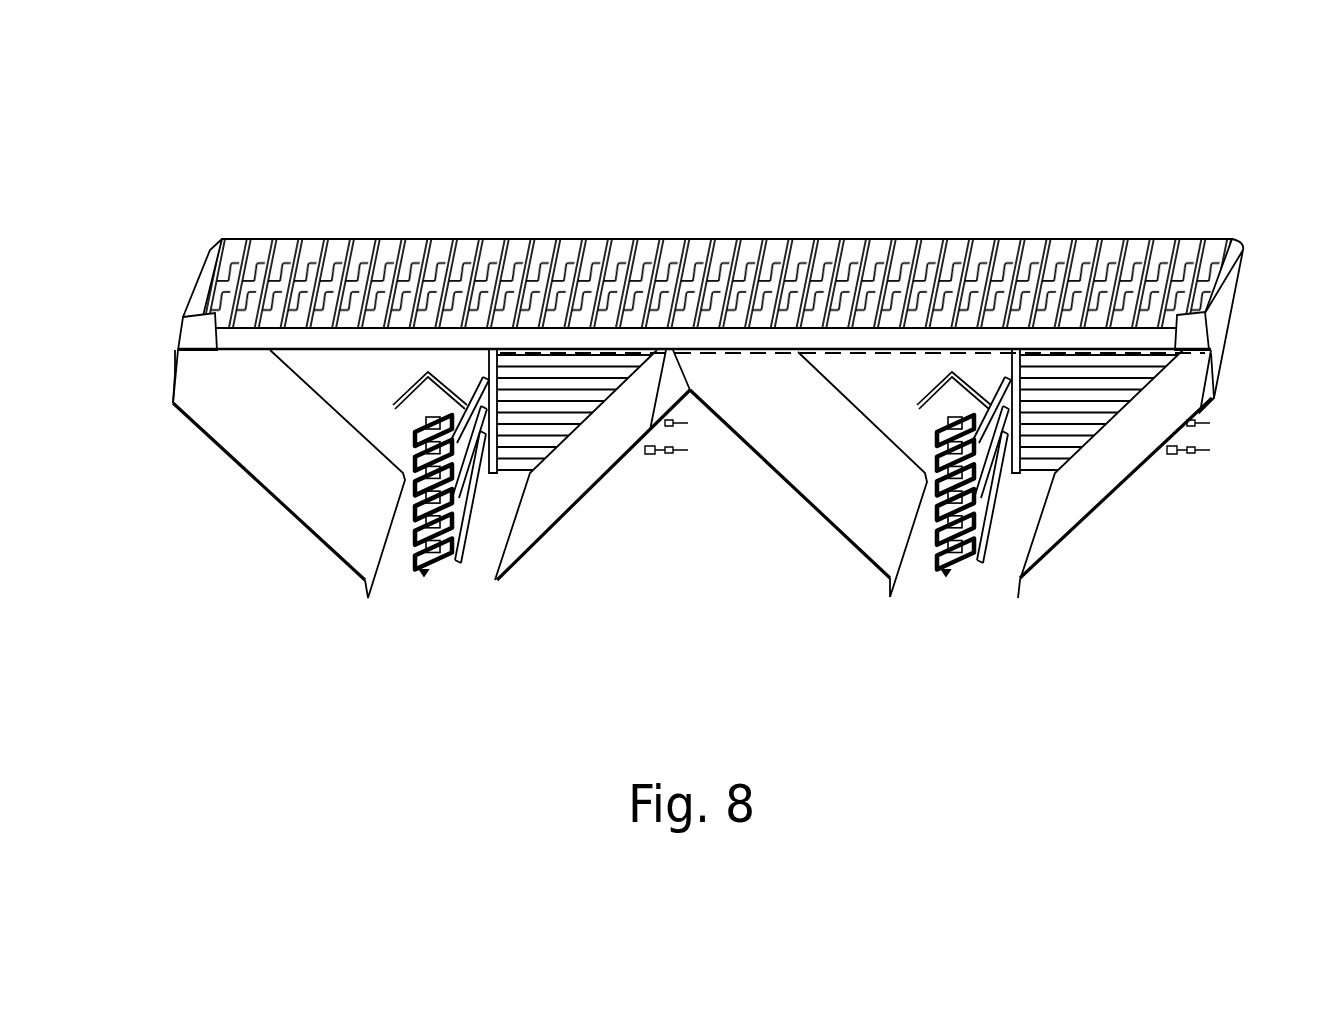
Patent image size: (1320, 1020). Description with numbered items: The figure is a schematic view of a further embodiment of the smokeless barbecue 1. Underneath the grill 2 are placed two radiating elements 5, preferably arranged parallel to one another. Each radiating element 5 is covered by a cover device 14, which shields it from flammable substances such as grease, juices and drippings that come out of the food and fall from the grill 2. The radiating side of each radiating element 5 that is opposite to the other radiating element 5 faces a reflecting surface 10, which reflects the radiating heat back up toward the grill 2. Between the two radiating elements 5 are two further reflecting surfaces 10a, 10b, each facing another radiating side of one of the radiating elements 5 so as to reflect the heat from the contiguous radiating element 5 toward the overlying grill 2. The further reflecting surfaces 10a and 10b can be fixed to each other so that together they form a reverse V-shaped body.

The smokeless barbecue 1 is at (708, 220).
The grill 2 is at (303, 238).
The radiating element 5 is at (409, 585).
The reflecting surface 10 is at (257, 425).
The further reflecting surface 10a is at (557, 490).
The further reflecting surface 10b is at (813, 462).
The cover device 14 is at (455, 362).